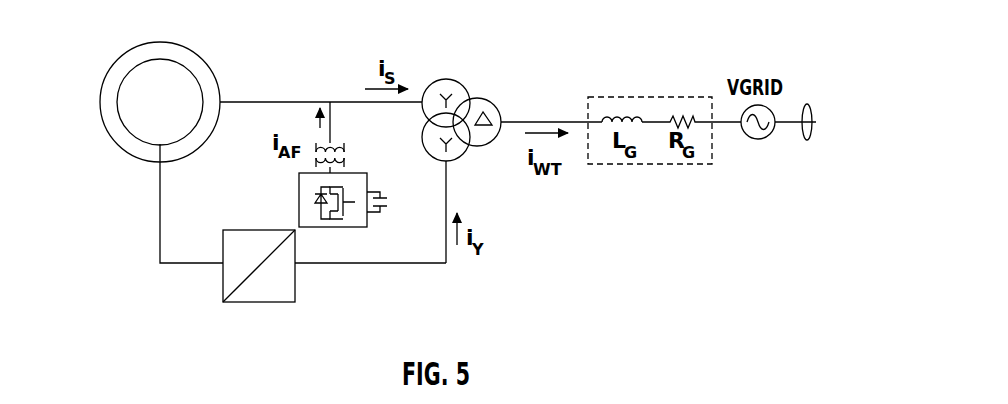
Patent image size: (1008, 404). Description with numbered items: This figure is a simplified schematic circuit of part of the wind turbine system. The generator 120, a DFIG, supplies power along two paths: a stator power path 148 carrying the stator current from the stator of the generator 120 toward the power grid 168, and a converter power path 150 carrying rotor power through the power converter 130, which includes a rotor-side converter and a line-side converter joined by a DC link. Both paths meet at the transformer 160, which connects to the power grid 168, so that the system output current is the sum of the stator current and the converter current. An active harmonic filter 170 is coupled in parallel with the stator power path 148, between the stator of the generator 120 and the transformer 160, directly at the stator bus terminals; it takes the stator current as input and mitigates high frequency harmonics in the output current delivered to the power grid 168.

The generator 120 is at (127, 52).
The power converter 130 is at (237, 317).
The stator power path 148 is at (320, 78).
The converter power path 150 is at (137, 216).
The transformer 160 is at (475, 77).
The power grid 168 is at (807, 140).
The active harmonic filter 170 is at (287, 172).